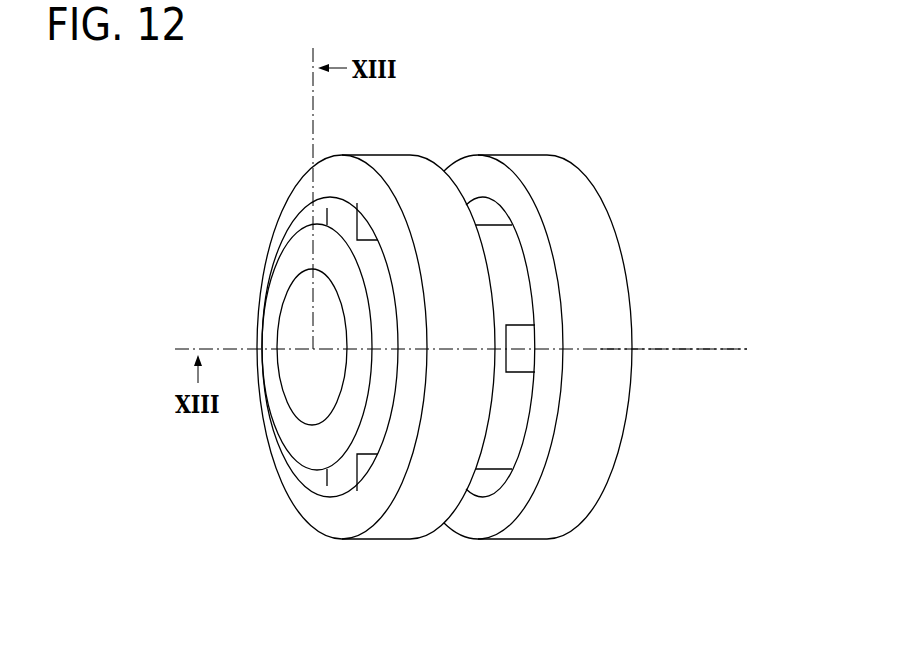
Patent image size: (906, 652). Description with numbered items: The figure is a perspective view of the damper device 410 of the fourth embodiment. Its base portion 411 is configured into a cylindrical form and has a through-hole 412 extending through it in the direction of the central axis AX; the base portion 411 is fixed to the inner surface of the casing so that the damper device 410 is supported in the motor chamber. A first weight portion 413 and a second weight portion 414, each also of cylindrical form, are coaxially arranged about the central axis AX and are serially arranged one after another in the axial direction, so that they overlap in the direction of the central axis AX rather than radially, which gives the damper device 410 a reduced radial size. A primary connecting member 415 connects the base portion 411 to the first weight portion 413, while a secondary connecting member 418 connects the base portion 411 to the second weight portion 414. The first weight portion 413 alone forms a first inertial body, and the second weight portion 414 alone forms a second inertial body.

The damper device 410 is at (690, 172).
The base portion 411 is at (305, 442).
The through-hole 412 is at (303, 373).
The first weight portion 413 is at (360, 190).
The second weight portion 414 is at (521, 200).
The primary connecting member 415 is at (357, 218).
The secondary connecting member 418 is at (524, 347).
The central axis AX is at (712, 349).